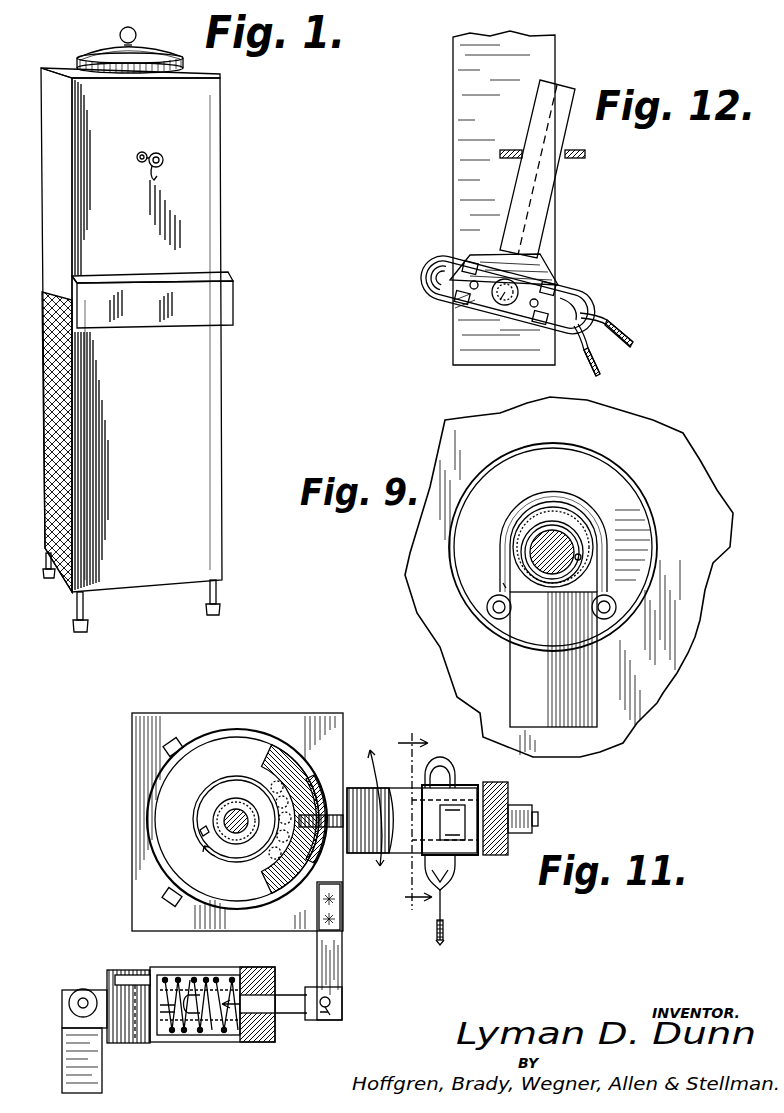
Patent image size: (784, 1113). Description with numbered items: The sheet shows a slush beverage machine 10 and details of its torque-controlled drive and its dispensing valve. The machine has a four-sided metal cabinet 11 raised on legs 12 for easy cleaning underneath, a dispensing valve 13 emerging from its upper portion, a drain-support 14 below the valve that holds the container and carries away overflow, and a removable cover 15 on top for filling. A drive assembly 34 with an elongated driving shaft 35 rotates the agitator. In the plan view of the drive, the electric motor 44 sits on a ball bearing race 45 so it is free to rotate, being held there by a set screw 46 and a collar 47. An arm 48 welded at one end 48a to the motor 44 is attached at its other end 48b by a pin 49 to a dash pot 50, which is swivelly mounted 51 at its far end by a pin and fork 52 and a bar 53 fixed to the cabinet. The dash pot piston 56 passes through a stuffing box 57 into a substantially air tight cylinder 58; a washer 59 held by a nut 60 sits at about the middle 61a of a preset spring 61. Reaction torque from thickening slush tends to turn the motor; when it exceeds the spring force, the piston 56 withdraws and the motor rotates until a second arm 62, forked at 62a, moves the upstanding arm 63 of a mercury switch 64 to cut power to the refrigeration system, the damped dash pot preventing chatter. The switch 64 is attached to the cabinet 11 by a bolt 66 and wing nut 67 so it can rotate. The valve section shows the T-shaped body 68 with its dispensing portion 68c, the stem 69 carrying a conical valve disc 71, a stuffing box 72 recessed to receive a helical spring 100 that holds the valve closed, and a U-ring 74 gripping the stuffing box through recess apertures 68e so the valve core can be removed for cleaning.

In FIG. 1, the beverage machine 10 is at (234, 166).
In FIG. 9, the beverage machine 10 is at (454, 444).
In FIG. 1, the cabinet 11 is at (215, 212).
In FIG. 11, the cabinet 11 is at (505, 785).
In FIG. 1, the legs 12 is at (84, 612).
In FIG. 1, the dispensing valve 13 is at (163, 158).
In FIG. 1, the drain-support 14 is at (232, 278).
In FIG. 1, the cover 15 is at (136, 40).
In FIG. 11, the drive assembly 34 is at (138, 837).
In FIG. 11, the driving shaft 35 is at (235, 800).
In FIG. 11, the motor 44 is at (338, 712).
In FIG. 11, the ball bearing race 45 is at (270, 776).
In FIG. 11, the set screw 46 is at (166, 748).
In FIG. 11, the collar 47 is at (236, 838).
In FIG. 11, the arm 48 is at (345, 963).
In FIG. 11, the welded end of arm 48a is at (340, 915).
In FIG. 11, the other end of arm 48b is at (345, 1007).
In FIG. 11, the pin 49 is at (330, 1010).
In FIG. 11, the dash pot 50 is at (212, 1046).
In FIG. 11, the swivel mounting 51 is at (80, 990).
In FIG. 11, the pin and fork 52 is at (92, 985).
In FIG. 11, the bar 53 is at (62, 1045).
In FIG. 11, the piston 56 is at (290, 1015).
In FIG. 11, the stuffing box 57 is at (262, 1025).
In FIG. 11, the cylinder 58 is at (204, 978).
In FIG. 11, the washer 59 is at (186, 976).
In FIG. 11, the nut 60 is at (170, 1038).
In FIG. 11, the spring 61 is at (232, 978).
In FIG. 11, the middle of spring 61a is at (192, 1040).
In FIG. 11, the second arm 62 is at (397, 788).
In FIG. 12, the forked end 62a is at (585, 154).
In FIG. 11, the forked end 62a is at (462, 800).
In FIG. 12, the upstanding arm 63 is at (566, 86).
In FIG. 11, the upstanding arm 63 is at (460, 855).
In FIG. 12, the mercury switch 64 is at (562, 296).
In FIG. 11, the mercury switch 64 is at (455, 880).
In FIG. 12, the bolt 66 is at (483, 312).
In FIG. 11, the bolt 66 is at (540, 818).
In FIG. 11, the wing nut 67 is at (528, 806).
In FIG. 9, the valve body 68 is at (583, 500).
In FIG. 9, the dispensing portion 68c is at (590, 686).
In FIG. 9, the recess apertures 68e is at (598, 540).
In FIG. 9, the valve stem 69 is at (552, 545).
In FIG. 9, the conical valve disc 71 is at (543, 595).
In FIG. 9, the stuffing box 72 is at (532, 512).
In FIG. 9, the U-ring 74 is at (608, 522).
In FIG. 9, the helical spring 100 is at (580, 562).